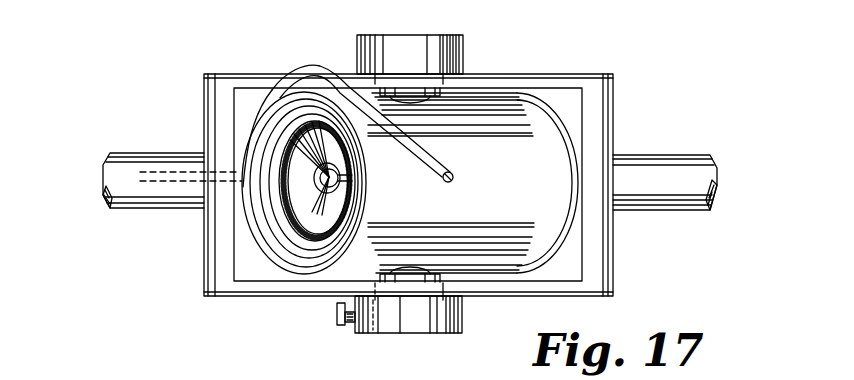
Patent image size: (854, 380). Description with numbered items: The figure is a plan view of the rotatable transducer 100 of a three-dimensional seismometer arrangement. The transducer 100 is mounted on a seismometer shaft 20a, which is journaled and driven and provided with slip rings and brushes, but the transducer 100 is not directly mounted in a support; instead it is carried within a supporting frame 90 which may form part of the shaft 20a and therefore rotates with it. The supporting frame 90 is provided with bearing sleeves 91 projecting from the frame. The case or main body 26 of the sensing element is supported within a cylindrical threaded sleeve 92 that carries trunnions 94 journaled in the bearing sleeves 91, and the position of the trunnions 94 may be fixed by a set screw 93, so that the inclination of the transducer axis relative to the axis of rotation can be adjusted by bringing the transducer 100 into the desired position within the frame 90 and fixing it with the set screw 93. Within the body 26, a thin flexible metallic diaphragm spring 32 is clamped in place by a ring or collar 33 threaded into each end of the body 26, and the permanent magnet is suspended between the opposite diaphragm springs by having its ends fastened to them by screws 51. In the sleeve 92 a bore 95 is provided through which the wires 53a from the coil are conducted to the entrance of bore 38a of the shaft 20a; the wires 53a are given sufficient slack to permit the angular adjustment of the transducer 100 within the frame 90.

The seismometer shaft 20a is at (693, 145).
The main body of the sensing element 26 is at (265, 210).
The diaphragm spring 32 is at (322, 182).
The ring or collar 33 is at (290, 250).
The bore of shaft 38a is at (172, 184).
The screws 51 is at (336, 167).
The wires 53a is at (431, 158).
The supporting frame 90 is at (590, 88).
The bearing sleeves 91 is at (463, 57).
The cylindrical threaded sleeve 92 is at (473, 183).
The set screw 93 is at (337, 316).
The trunnions 94 is at (379, 60).
The bore 95 is at (455, 177).
The transducer 100 is at (258, 266).